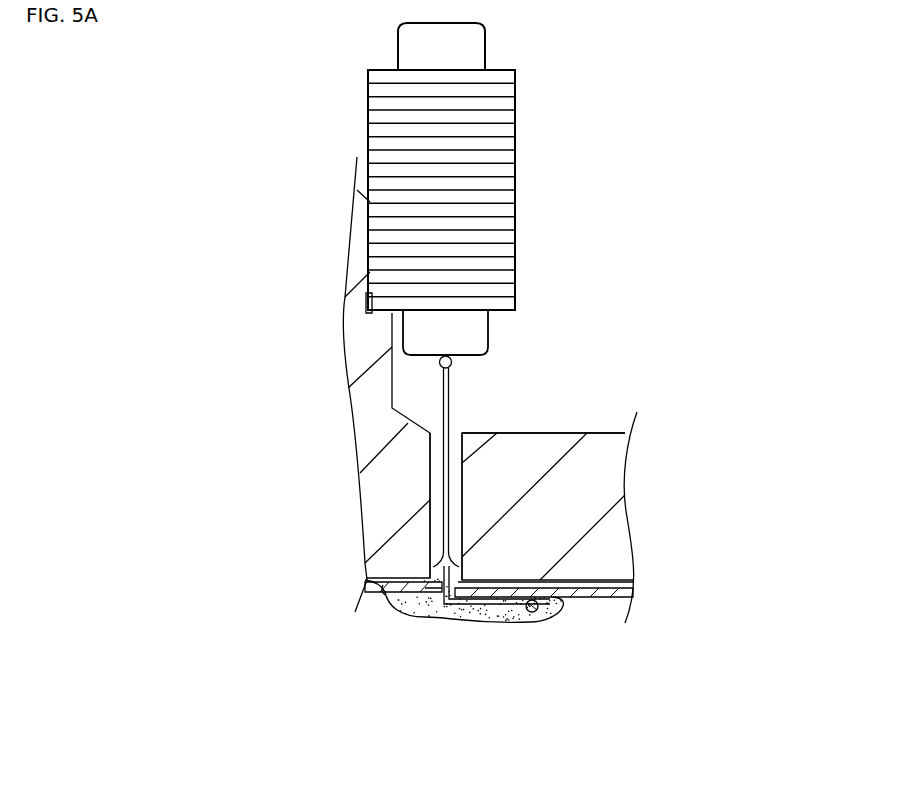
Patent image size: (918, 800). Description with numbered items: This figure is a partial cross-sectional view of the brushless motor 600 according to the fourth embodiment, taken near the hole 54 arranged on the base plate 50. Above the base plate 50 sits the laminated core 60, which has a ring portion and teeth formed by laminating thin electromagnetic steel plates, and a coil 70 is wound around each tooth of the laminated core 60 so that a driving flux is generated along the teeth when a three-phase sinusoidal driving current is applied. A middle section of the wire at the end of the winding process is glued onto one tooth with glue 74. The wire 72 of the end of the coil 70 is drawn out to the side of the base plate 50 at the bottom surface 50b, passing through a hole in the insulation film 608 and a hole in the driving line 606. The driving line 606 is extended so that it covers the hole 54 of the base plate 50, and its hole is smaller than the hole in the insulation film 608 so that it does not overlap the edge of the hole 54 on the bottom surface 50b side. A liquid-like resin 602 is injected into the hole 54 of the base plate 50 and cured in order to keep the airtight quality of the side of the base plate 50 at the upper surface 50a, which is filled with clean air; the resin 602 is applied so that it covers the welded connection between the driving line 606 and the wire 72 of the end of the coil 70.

The base plate 50 is at (403, 462).
The upper surface 50a is at (573, 432).
The bottom surface 50b is at (617, 598).
The hole 54 is at (455, 490).
The laminated core 60 is at (505, 240).
The coil 70 is at (467, 47).
The wire 72 is at (452, 405).
The glue 74 is at (452, 362).
The brushless motor 600 is at (495, 763).
The resin 602 is at (405, 607).
The driving line 606 is at (448, 615).
The insulation film 608 is at (365, 574).